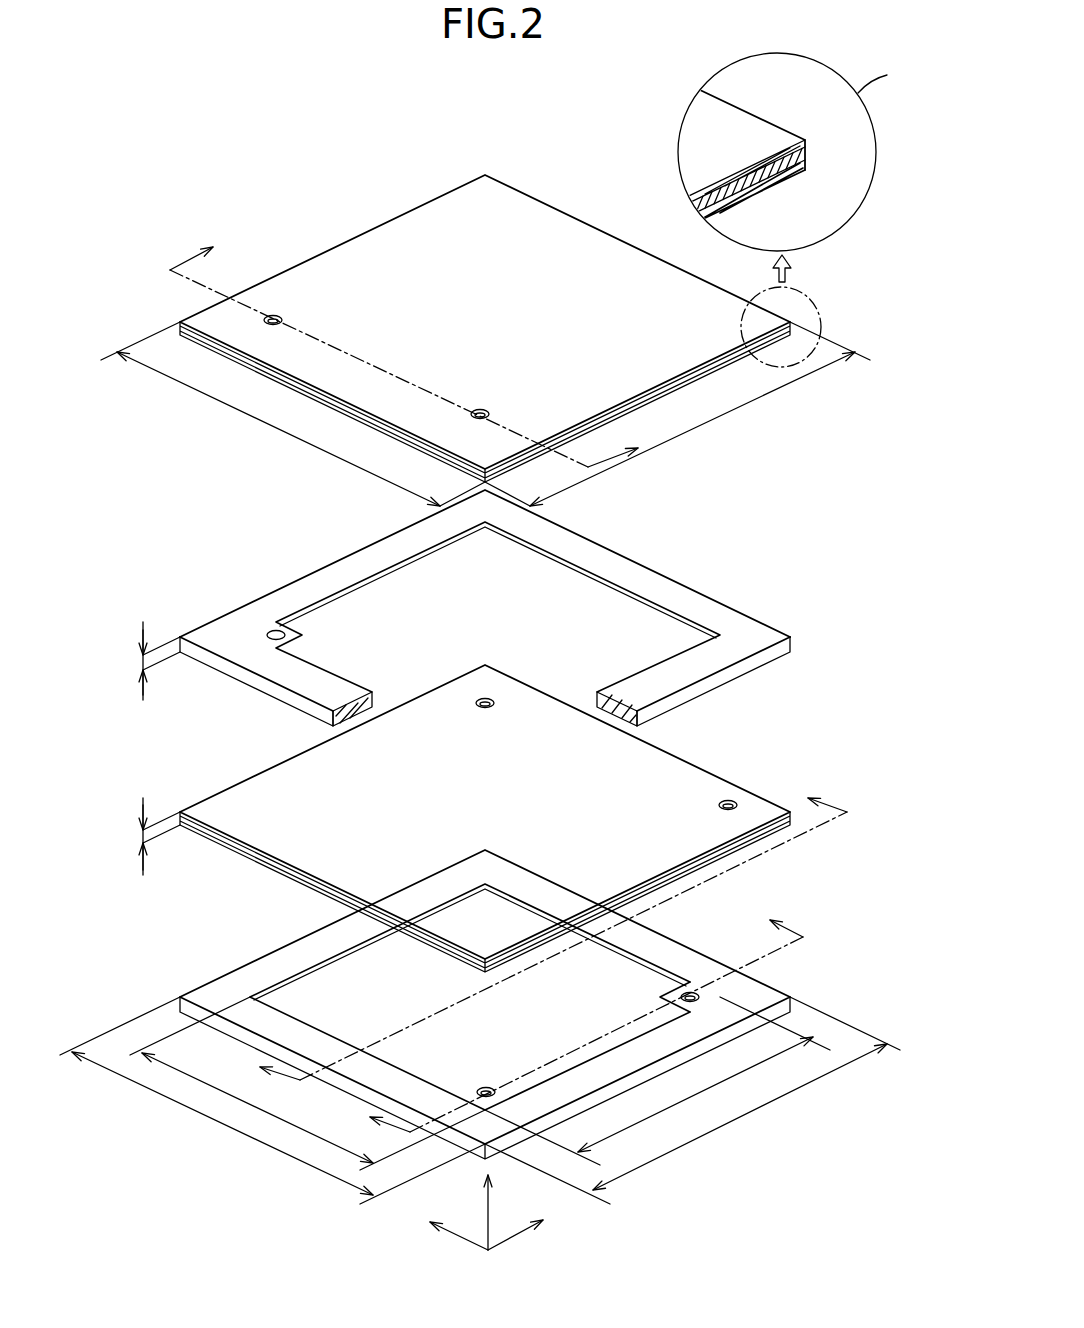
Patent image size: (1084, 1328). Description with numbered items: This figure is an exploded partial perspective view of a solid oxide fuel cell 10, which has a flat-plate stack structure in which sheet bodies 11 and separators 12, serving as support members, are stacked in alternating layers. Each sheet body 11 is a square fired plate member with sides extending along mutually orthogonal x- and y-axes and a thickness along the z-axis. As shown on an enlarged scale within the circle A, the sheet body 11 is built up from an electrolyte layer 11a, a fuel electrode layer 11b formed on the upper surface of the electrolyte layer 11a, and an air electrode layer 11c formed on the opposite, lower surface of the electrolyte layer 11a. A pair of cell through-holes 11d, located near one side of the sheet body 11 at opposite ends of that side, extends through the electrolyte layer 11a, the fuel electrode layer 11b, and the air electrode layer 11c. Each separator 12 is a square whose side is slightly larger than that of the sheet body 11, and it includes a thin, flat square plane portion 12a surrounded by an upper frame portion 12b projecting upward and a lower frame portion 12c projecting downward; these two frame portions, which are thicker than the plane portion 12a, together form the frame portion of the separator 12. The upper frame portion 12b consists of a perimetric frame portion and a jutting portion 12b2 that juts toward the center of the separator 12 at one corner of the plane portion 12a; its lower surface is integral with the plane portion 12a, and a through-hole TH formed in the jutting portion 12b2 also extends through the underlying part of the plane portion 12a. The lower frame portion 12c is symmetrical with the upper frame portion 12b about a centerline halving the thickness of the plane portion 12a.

The fuel cell 10 is at (542, 154).
The sheet body 11 is at (586, 209).
The electrolyte layer 11a is at (808, 153).
The fuel electrode layer 11b is at (808, 143).
The air electrode layer 11c is at (808, 167).
The cell through-hole 11d is at (273, 313).
The separator 12 is at (688, 540).
The plane portion 12a is at (565, 578).
The upper frame portion 12b is at (714, 608).
The jutting portion 12b2 is at (691, 987).
The lower frame portion 12c is at (728, 684).
The through-hole TH is at (694, 1004).